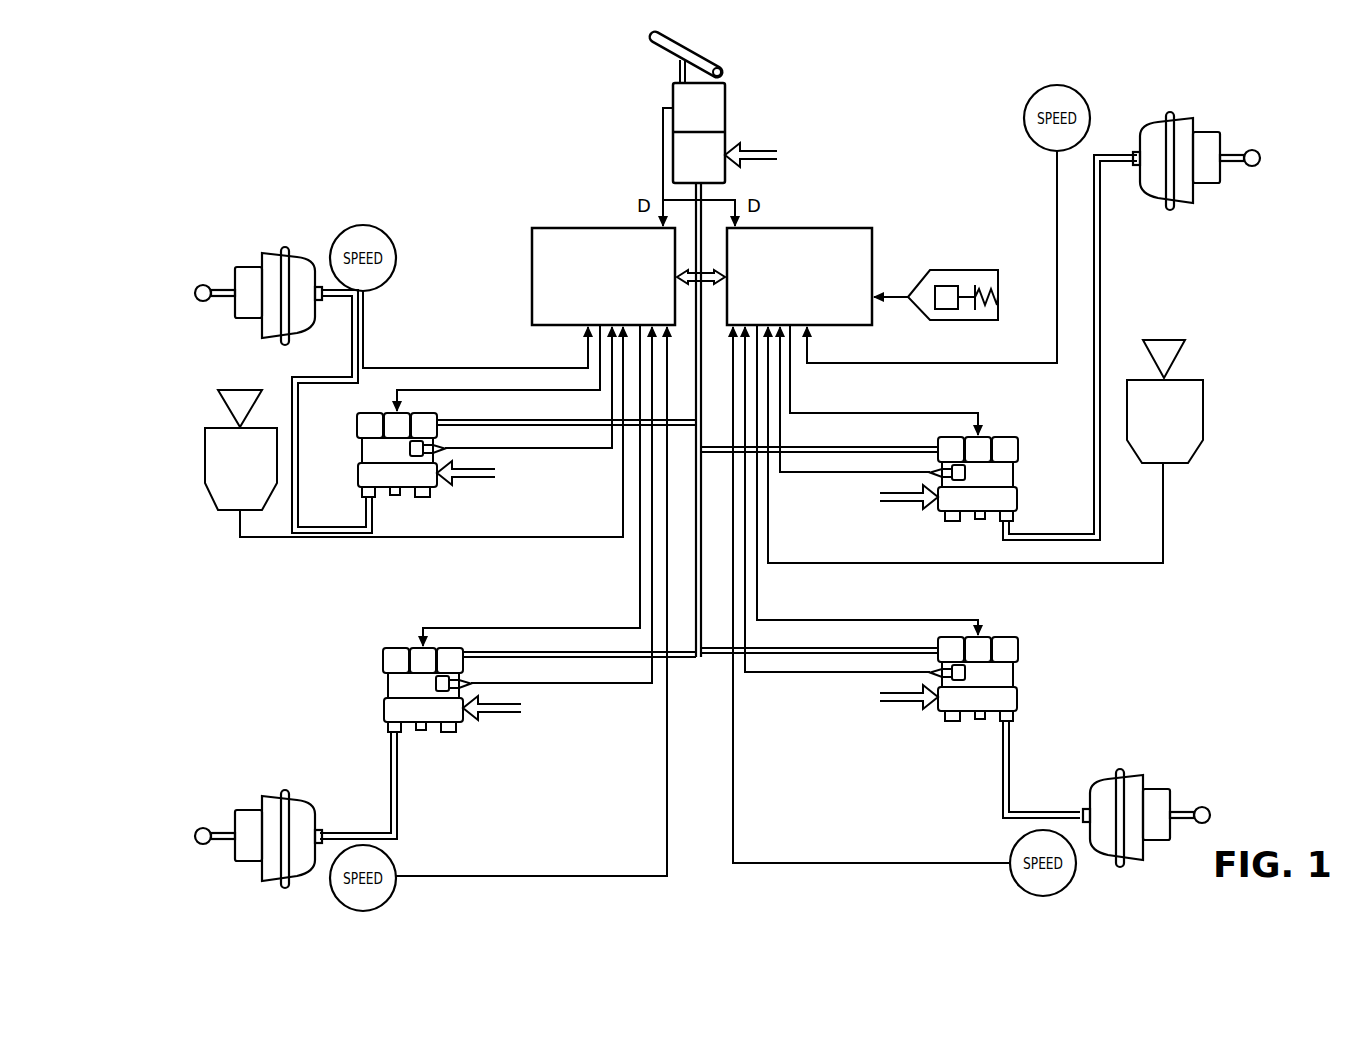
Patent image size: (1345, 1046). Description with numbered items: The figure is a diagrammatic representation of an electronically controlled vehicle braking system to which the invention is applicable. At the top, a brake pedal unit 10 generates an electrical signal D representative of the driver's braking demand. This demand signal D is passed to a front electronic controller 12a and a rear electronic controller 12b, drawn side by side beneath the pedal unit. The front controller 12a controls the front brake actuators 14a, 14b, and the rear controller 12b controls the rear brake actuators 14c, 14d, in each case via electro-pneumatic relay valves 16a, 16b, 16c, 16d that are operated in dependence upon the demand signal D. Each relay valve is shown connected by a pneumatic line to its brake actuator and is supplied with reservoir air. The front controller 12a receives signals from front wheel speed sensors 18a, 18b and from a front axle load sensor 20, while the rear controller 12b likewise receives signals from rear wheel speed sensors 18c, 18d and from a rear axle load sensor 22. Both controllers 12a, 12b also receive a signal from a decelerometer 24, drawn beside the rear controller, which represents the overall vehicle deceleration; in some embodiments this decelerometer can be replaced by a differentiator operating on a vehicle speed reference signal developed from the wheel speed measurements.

The brake pedal unit 10 is at (736, 116).
The front electronic controller 12a is at (532, 262).
The rear electronic controller 12b is at (873, 262).
The front brake actuator 14a is at (270, 262).
The front brake actuator 14b is at (297, 803).
The rear brake actuator 14c is at (1185, 188).
The rear brake actuator 14d is at (1135, 792).
The electro-pneumatic relay valve 16a is at (400, 480).
The electro-pneumatic relay valve 16b is at (447, 722).
The electro-pneumatic relay valve 16c is at (980, 503).
The electro-pneumatic relay valve 16d is at (1018, 692).
The front wheel speed sensor 18a is at (393, 250).
The front wheel speed sensor 18b is at (390, 858).
The rear wheel speed sensor 18c is at (1040, 150).
The rear wheel speed sensor 18d is at (1065, 884).
The front axle load sensor 20 is at (222, 499).
The rear axle load sensor 22 is at (1185, 440).
The decelerometer 24 is at (960, 276).